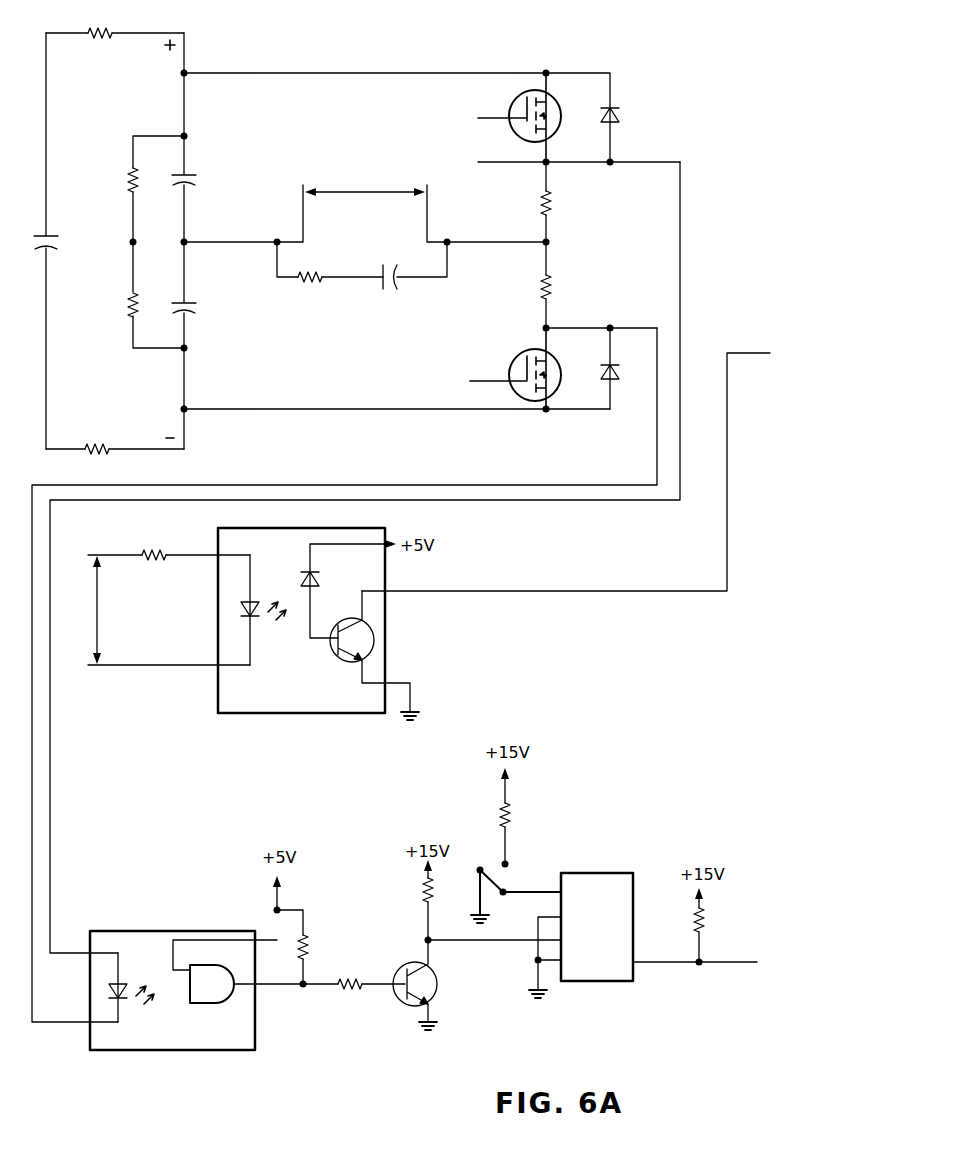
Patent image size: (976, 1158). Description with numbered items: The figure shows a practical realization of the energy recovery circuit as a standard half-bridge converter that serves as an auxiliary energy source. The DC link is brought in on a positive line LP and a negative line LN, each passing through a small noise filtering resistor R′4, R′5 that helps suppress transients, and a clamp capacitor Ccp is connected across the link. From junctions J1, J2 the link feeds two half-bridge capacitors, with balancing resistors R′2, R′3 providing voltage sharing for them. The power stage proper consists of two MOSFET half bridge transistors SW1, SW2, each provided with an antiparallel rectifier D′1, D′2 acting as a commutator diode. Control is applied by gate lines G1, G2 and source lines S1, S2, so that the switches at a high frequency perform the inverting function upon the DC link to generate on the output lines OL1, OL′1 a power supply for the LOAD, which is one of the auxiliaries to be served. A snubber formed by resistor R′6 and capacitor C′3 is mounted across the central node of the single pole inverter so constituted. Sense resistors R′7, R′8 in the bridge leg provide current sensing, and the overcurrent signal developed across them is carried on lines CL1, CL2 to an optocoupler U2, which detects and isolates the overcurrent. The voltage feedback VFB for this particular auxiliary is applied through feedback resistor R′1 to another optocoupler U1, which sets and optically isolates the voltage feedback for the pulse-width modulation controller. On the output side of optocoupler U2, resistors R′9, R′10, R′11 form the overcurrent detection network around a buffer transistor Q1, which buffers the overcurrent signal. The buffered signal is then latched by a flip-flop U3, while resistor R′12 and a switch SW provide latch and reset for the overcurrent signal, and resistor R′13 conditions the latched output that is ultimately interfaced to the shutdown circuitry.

The noise filtering resistor R′4 is at (103, 32).
The positive DC link line LP is at (141, 35).
The junction J1 is at (182, 74).
The balancing resistor R′2 is at (130, 171).
The clamp capacitor Ccp is at (52, 240).
The balancing resistor R′3 is at (129, 300).
The junction J2 is at (182, 408).
The noise filtering resistor R′5 is at (94, 445).
The negative DC link line LN is at (140, 448).
The output line OL1 is at (301, 198).
The load LOAD is at (372, 191).
The output line OL′1 is at (431, 201).
The snubber resistor R′6 is at (313, 272).
The snubber capacitor C′3 is at (393, 292).
The half bridge transistor SW1 is at (519, 102).
The gate line G1 is at (478, 118).
The source line S1 is at (500, 160).
The antiparallel rectifier D′1 is at (625, 118).
The sense resistor R′7 is at (556, 205).
The sense resistor R′8 is at (556, 289).
The half bridge transistor SW2 is at (515, 385).
The gate line G2 is at (483, 381).
The antiparallel rectifier D′2 is at (602, 365).
The source line S2 is at (472, 414).
The current sense line CL2 is at (574, 485).
The current sense line CL1 is at (574, 502).
The optocoupler U1 is at (233, 718).
The feedback resistor R′1 is at (150, 553).
The voltage feedback VFB is at (97, 610).
The optocoupler U2 is at (176, 1050).
The overcurrent detection resistor R′9 is at (312, 950).
The overcurrent detection resistor R′10 is at (341, 978).
The buffer transistor Q1 is at (405, 1004).
The overcurrent detection resistor R′11 is at (420, 891).
The reset resistor R′12 is at (515, 818).
The switch SW is at (549, 861).
The flip-flop U3 is at (610, 935).
The output resistor R′13 is at (687, 911).